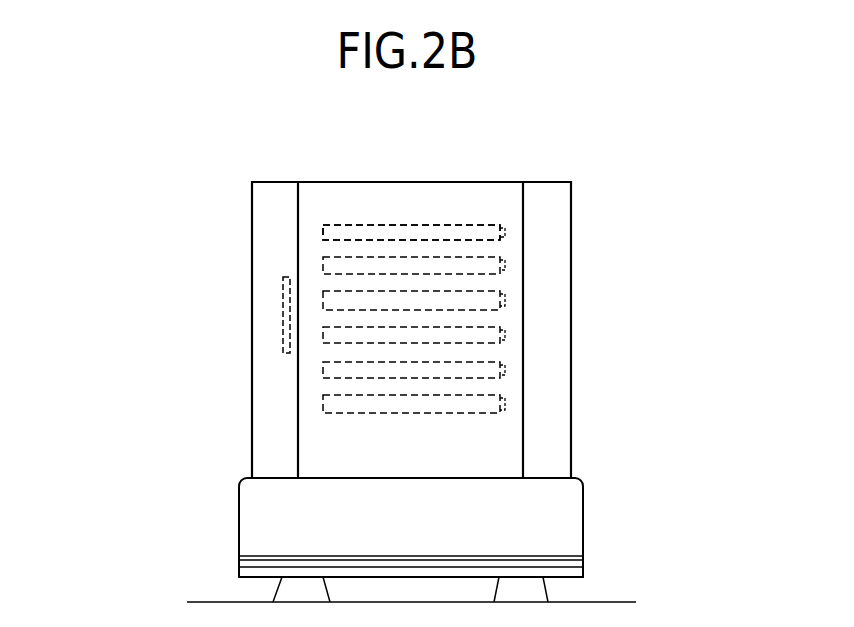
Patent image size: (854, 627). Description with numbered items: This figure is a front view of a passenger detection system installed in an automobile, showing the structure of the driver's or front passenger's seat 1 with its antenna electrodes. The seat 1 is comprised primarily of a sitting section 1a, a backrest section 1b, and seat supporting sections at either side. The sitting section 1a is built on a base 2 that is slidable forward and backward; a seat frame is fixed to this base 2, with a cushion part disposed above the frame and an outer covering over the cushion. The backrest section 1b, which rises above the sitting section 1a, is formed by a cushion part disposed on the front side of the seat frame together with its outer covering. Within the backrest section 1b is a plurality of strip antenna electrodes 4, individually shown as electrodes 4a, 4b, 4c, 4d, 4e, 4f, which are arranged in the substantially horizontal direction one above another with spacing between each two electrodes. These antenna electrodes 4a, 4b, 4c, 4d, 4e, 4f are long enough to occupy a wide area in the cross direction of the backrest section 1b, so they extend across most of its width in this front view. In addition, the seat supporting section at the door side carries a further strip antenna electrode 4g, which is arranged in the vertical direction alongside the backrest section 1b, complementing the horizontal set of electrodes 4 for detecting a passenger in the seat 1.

The seat 1 is at (402, 182).
The sitting section 1a is at (281, 478).
The backrest section 1b is at (318, 248).
The base 2 is at (238, 558).
The strip antenna electrodes 4 is at (455, 224).
The strip antenna electrode 4a is at (505, 231).
The strip antenna electrode 4b is at (505, 264).
The strip antenna electrode 4c is at (505, 298).
The strip antenna electrode 4d is at (505, 333).
The strip antenna electrode 4e is at (505, 368).
The strip antenna electrode 4f is at (505, 401).
The strip antenna electrode 4g is at (283, 330).